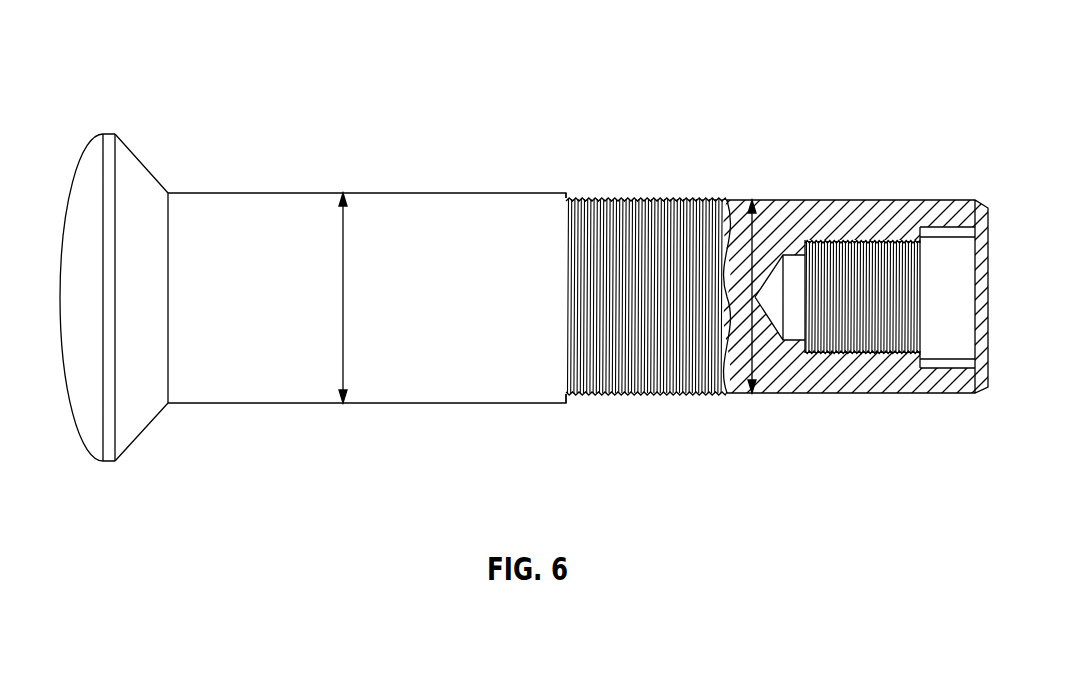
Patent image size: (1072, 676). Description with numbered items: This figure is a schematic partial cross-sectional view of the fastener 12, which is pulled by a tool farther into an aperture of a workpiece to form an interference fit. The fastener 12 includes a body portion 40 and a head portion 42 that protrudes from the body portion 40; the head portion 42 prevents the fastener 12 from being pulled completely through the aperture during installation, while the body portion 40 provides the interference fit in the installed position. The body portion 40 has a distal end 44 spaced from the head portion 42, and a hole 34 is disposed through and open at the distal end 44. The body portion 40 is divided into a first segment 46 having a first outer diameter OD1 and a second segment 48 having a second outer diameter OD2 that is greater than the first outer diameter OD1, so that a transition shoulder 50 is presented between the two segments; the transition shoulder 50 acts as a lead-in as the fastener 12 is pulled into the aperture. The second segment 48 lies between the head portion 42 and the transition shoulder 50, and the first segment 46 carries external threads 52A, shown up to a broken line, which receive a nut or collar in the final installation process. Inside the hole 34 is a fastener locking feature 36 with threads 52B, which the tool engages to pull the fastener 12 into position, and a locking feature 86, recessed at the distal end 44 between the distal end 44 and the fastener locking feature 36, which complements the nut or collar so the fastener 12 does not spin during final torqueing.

The fastener 12 is at (143, 71).
The head portion 42 is at (140, 433).
The body portion 40 is at (447, 303).
The second segment 48 is at (478, 404).
The first segment 46 is at (646, 301).
The transition shoulder 50 is at (568, 194).
The threads 52A is at (661, 212).
The threads 52B is at (826, 342).
The fastener locking feature 36 is at (850, 304).
The hole 34 is at (856, 342).
The distal end 44 is at (990, 207).
The locking feature 86 is at (950, 369).
The first outer diameter OD1 is at (766, 218).
The second outer diameter OD2 is at (343, 302).